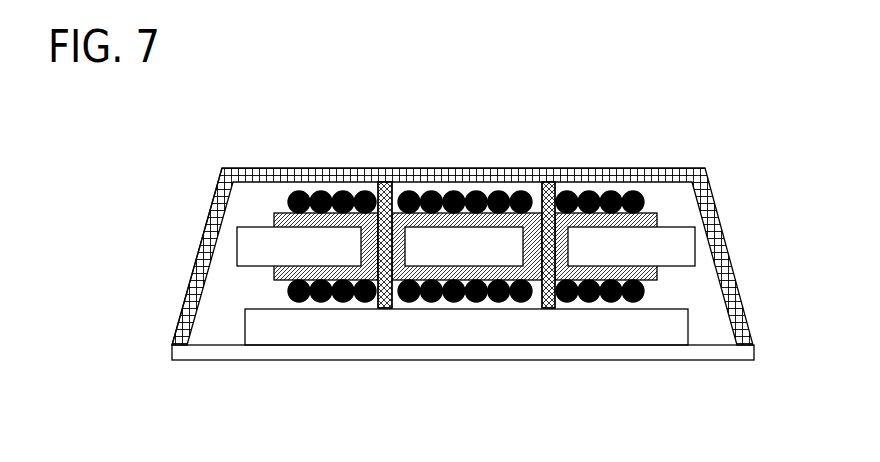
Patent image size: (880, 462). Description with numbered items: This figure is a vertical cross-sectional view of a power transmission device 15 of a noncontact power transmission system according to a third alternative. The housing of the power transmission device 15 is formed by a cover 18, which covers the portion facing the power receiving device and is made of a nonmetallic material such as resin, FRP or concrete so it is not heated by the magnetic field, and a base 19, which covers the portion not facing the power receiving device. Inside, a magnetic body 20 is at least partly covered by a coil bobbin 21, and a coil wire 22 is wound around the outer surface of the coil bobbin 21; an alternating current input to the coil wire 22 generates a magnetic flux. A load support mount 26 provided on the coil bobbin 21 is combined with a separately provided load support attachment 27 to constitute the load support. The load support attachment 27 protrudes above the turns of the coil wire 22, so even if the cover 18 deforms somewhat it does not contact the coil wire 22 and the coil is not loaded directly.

The power transmission device 15 is at (727, 178).
The cover 18 is at (221, 184).
The base 19 is at (282, 352).
The magnetic body 20 is at (258, 250).
The coil bobbin 21 is at (311, 220).
The coil wire 22 is at (320, 205).
The load support mount 26 is at (400, 242).
The load support attachment 27 is at (550, 197).